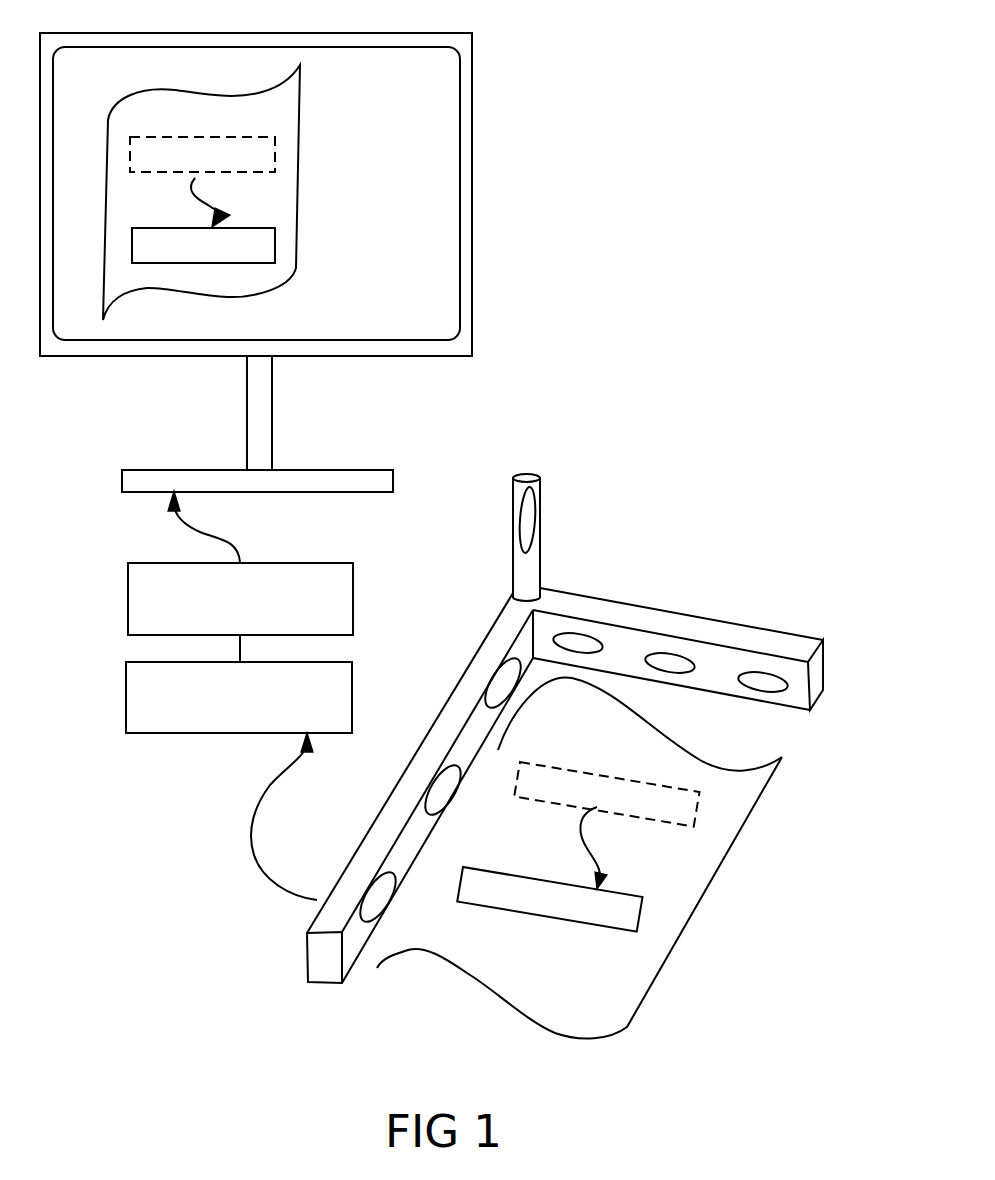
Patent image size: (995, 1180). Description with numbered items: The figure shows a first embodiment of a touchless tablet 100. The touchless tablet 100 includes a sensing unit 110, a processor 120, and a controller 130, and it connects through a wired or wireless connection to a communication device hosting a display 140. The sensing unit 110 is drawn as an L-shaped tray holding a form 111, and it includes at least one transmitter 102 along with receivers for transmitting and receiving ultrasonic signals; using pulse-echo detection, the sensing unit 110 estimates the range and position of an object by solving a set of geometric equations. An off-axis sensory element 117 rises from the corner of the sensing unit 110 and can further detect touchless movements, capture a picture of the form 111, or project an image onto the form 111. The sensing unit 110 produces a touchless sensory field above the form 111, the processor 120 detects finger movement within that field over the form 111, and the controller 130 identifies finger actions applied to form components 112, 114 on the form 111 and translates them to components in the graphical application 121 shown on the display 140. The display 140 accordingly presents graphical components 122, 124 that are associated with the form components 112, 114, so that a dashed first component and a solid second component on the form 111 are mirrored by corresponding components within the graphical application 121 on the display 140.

The touchless tablet 100 is at (775, 528).
The transmitter 102 is at (787, 685).
The sensing unit 110 is at (308, 947).
The form 111 is at (660, 972).
The form component 112 is at (700, 806).
The form component 114 is at (643, 915).
The off-axis sensory element 117 is at (540, 480).
The processor 120 is at (126, 697).
The graphical application 121 is at (300, 100).
The graphical component 122 is at (276, 152).
The graphical component 124 is at (276, 243).
The controller 130 is at (127, 597).
The display 140 is at (472, 332).